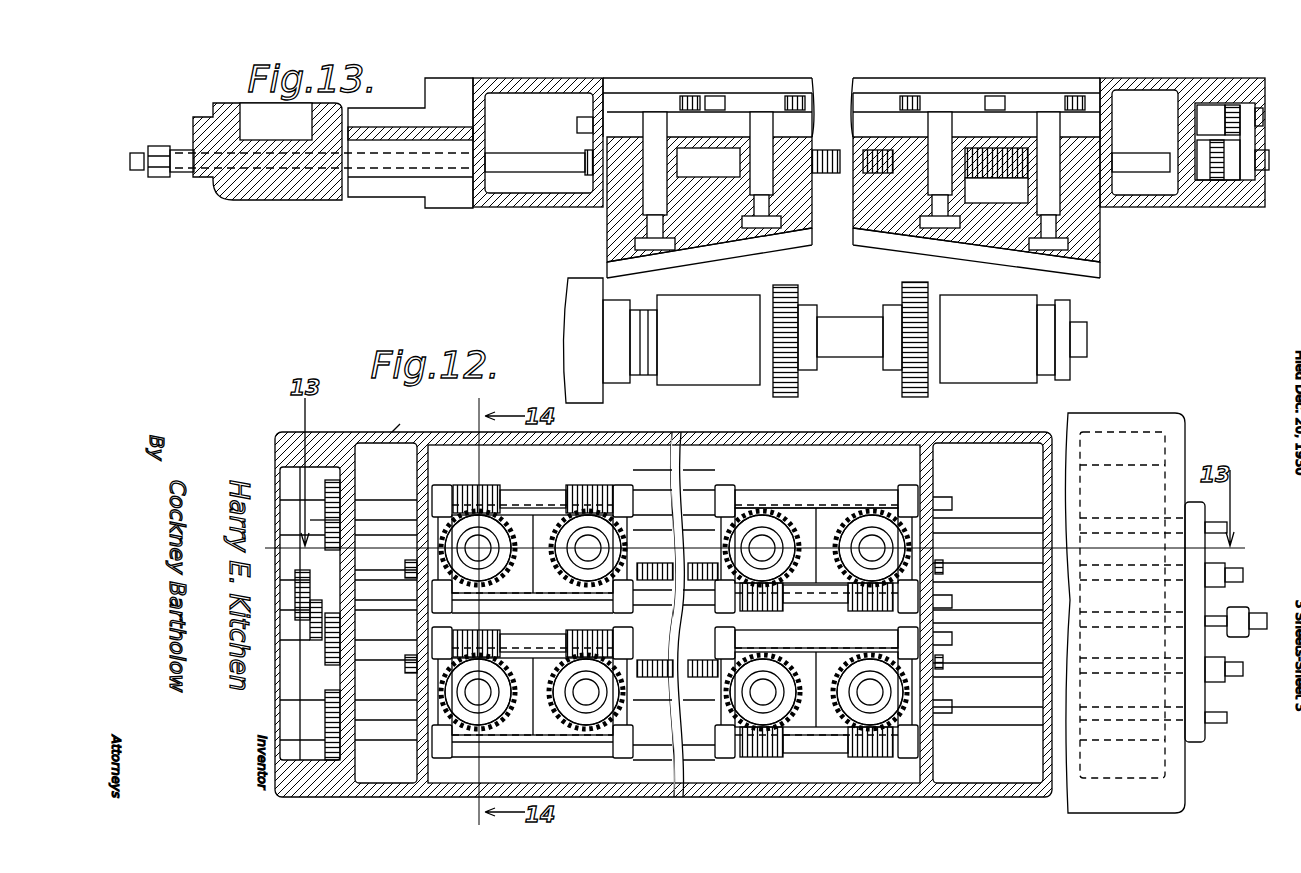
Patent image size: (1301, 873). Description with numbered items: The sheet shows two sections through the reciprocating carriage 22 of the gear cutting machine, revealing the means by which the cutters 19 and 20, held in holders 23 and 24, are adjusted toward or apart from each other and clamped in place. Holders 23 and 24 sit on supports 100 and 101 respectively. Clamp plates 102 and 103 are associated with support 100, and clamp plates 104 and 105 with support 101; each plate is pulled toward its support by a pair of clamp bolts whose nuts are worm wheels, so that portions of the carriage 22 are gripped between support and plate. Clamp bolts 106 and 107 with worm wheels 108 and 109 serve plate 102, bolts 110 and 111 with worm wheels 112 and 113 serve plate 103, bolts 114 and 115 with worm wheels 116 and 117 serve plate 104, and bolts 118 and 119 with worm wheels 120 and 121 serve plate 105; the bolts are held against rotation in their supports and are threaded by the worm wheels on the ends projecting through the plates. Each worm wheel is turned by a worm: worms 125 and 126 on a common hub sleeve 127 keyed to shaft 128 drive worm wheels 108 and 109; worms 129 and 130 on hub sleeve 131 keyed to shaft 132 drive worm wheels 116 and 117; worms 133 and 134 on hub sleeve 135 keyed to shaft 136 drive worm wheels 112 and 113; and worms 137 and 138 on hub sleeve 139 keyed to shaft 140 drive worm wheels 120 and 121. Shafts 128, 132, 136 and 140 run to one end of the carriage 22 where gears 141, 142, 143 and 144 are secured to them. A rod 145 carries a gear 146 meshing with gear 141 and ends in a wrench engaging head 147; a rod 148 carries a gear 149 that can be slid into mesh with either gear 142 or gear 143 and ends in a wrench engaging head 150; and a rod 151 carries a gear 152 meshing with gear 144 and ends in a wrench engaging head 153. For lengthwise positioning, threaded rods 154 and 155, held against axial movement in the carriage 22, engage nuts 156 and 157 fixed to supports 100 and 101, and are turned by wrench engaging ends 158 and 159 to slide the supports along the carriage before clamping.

In FIG. 13, the cutter 19 is at (918, 380).
In FIG. 13, the cutter 20 is at (788, 372).
In FIG. 13, the carriage 22 is at (508, 207).
In FIG. 12, the carriage 22 is at (406, 419).
In FIG. 13, the holder 23 is at (974, 336).
In FIG. 13, the holder 24 is at (703, 340).
In FIG. 13, the support 100 is at (1085, 237).
In FIG. 13, the support 101 is at (620, 230).
In FIG. 13, the clamp plate 102 is at (995, 135).
In FIG. 12, the clamp plate 102 is at (530, 530).
In FIG. 12, the clamp plate 103 is at (548, 722).
In FIG. 13, the clamp plate 104 is at (712, 118).
In FIG. 12, the clamp plate 104 is at (808, 525).
In FIG. 12, the clamp plate 105 is at (803, 725).
In FIG. 13, the clamp bolt 106 is at (1041, 163).
In FIG. 12, the clamp bolt 106 is at (478, 548).
In FIG. 13, the clamp bolt 107 is at (931, 163).
In FIG. 12, the clamp bolt 107 is at (588, 548).
In FIG. 13, the worm wheel 108 is at (1078, 118).
In FIG. 12, the worm wheel 108 is at (500, 540).
In FIG. 13, the worm wheel 109 is at (910, 118).
In FIG. 12, the worm wheel 109 is at (612, 500).
In FIG. 12, the clamp bolt 110 is at (480, 692).
In FIG. 12, the clamp bolt 111 is at (586, 692).
In FIG. 12, the worm wheel 112 is at (466, 720).
In FIG. 12, the worm wheel 113 is at (592, 720).
In FIG. 13, the clamp bolt 114 is at (752, 163).
In FIG. 12, the clamp bolt 114 is at (762, 548).
In FIG. 13, the clamp bolt 115 is at (646, 164).
In FIG. 12, the clamp bolt 115 is at (872, 548).
In FIG. 13, the worm wheel 116 is at (788, 118).
In FIG. 12, the worm wheel 116 is at (777, 512).
In FIG. 13, the worm wheel 117 is at (687, 118).
In FIG. 12, the worm wheel 117 is at (862, 512).
In FIG. 12, the clamp bolt 118 is at (765, 692).
In FIG. 12, the clamp bolt 119 is at (868, 692).
In FIG. 12, the worm wheel 120 is at (742, 730).
In FIG. 12, the worm wheel 121 is at (893, 730).
In FIG. 12, the worm 125 is at (478, 497).
In FIG. 12, the worm 126 is at (585, 497).
In FIG. 12, the hub sleeve 127 is at (560, 497).
In FIG. 12, the shaft 128 is at (700, 497).
In FIG. 12, the worm 129 is at (770, 613).
In FIG. 12, the worm 130 is at (882, 613).
In FIG. 12, the hub sleeve 131 is at (818, 603).
In FIG. 13, the shaft 132 is at (577, 127).
In FIG. 12, the shaft 132 is at (655, 578).
In FIG. 12, the worm 133 is at (490, 628).
In FIG. 12, the worm 134 is at (600, 628).
In FIG. 12, the hub sleeve 135 is at (545, 640).
In FIG. 12, the shaft 136 is at (660, 652).
In FIG. 12, the worm 137 is at (760, 748).
In FIG. 12, the worm 138 is at (868, 748).
In FIG. 12, the hub sleeve 139 is at (800, 752).
In FIG. 12, the shaft 140 is at (700, 740).
In FIG. 12, the gear 141 is at (332, 480).
In FIG. 13, the gear 142 is at (1232, 105).
In FIG. 12, the gear 142 is at (295, 575).
In FIG. 12, the gear 143 is at (310, 640).
In FIG. 12, the gear 144 is at (333, 760).
In FIG. 12, the rod 145 is at (387, 518).
In FIG. 12, the gear 146 is at (345, 543).
In FIG. 12, the wrench engaging head 147 is at (1228, 530).
In FIG. 12, the rod 148 is at (376, 618).
In FIG. 13, the gear 149 is at (1222, 180).
In FIG. 12, the gear 149 is at (325, 618).
In FIG. 13, the wrench engaging head 150 is at (138, 172).
In FIG. 12, the wrench engaging head 150 is at (1260, 630).
In FIG. 12, the rod 151 is at (393, 718).
In FIG. 12, the gear 152 is at (340, 700).
In FIG. 12, the wrench engaging head 153 is at (1218, 723).
In FIG. 12, the threaded rod 154 is at (972, 668).
In FIG. 13, the threaded rod 155 is at (873, 173).
In FIG. 12, the threaded rod 155 is at (1000, 566).
In FIG. 13, the nut 156 is at (986, 202).
In FIG. 13, the nut 157 is at (696, 168).
In FIG. 12, the wrench engaging end 158 is at (1243, 676).
In FIG. 13, the wrench engaging end 159 is at (160, 178).
In FIG. 12, the wrench engaging end 159 is at (1240, 582).